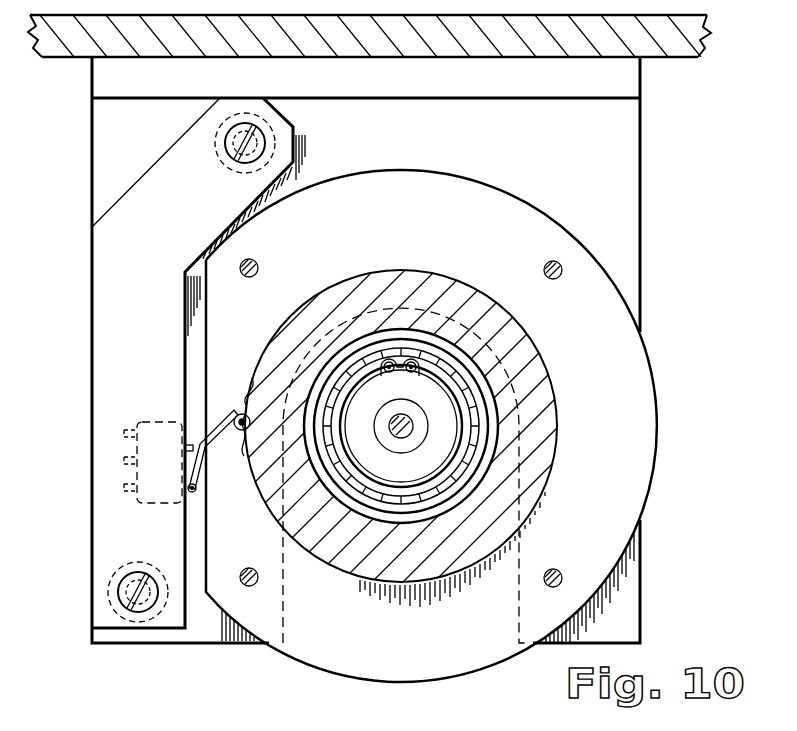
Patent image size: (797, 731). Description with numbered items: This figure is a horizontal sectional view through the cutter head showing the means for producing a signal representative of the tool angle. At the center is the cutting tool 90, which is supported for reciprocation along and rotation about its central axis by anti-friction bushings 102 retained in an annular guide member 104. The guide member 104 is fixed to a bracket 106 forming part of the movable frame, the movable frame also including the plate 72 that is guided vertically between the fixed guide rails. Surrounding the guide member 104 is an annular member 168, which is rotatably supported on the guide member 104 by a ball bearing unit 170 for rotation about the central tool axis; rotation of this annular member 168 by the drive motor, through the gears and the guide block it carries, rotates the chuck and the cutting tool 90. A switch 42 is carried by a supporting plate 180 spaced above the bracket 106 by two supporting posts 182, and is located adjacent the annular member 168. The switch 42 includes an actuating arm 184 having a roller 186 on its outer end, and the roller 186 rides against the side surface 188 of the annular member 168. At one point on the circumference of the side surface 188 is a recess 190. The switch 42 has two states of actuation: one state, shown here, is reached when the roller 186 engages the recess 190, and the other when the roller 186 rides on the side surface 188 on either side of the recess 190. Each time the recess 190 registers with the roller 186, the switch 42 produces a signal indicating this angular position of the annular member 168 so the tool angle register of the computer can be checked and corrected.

The switch 42 is at (160, 420).
The plate 72 is at (87, 54).
The cutting tool 90 is at (392, 430).
The bushings 102 is at (413, 403).
The annular guide member 104 is at (604, 525).
The bracket 106 is at (604, 634).
The annular member 168 is at (540, 480).
The ball bearing unit 170 is at (490, 433).
The supporting plate 180 is at (113, 211).
The supporting posts 182 is at (277, 133).
The actuating arm 184 is at (227, 417).
The roller 186 is at (246, 452).
The side surface 188 is at (258, 358).
The recess 190 is at (247, 410).